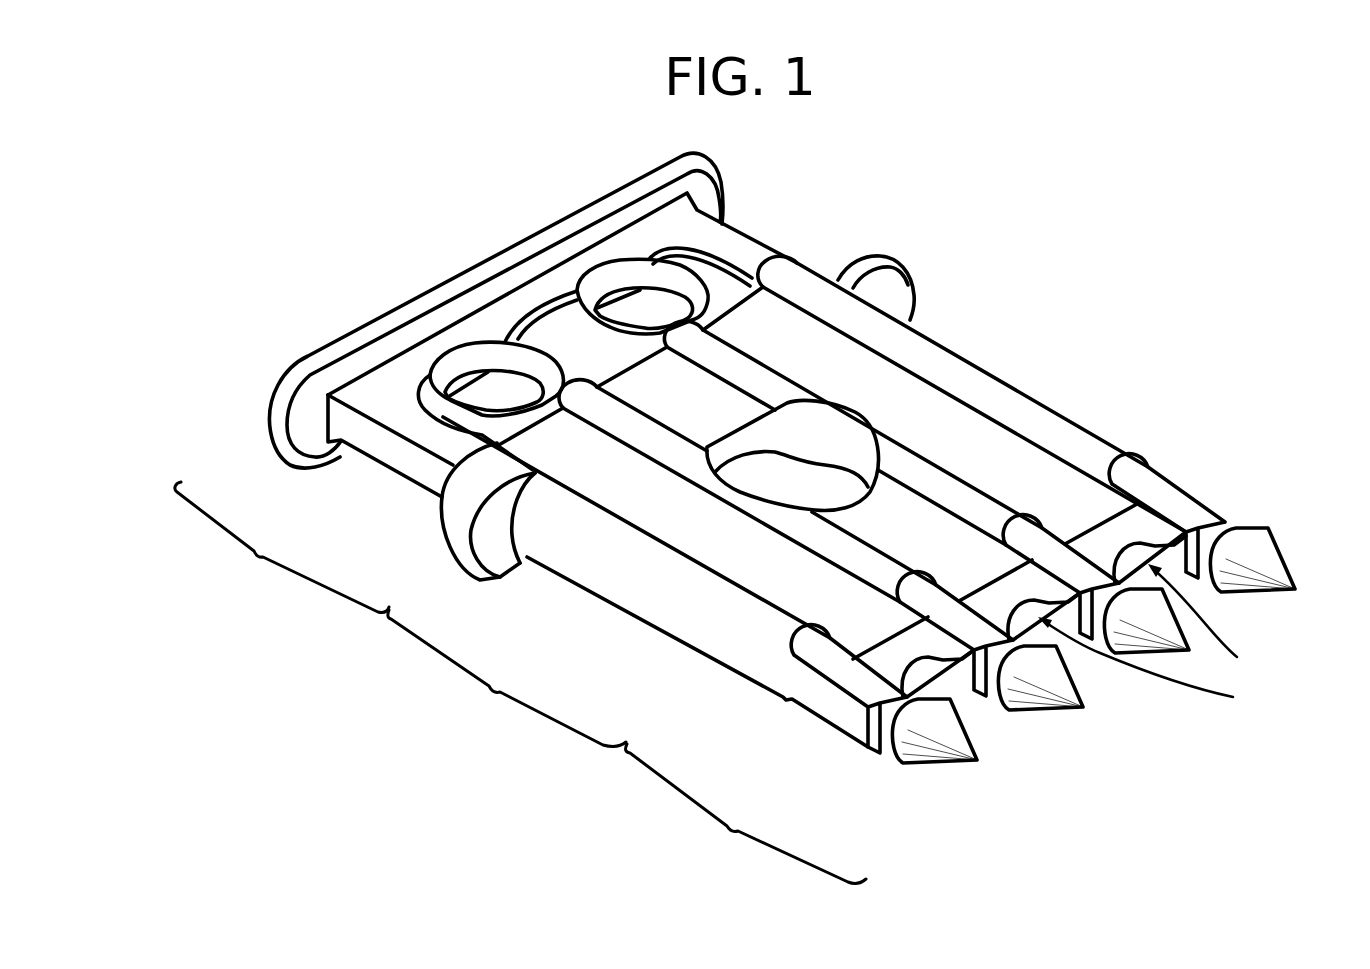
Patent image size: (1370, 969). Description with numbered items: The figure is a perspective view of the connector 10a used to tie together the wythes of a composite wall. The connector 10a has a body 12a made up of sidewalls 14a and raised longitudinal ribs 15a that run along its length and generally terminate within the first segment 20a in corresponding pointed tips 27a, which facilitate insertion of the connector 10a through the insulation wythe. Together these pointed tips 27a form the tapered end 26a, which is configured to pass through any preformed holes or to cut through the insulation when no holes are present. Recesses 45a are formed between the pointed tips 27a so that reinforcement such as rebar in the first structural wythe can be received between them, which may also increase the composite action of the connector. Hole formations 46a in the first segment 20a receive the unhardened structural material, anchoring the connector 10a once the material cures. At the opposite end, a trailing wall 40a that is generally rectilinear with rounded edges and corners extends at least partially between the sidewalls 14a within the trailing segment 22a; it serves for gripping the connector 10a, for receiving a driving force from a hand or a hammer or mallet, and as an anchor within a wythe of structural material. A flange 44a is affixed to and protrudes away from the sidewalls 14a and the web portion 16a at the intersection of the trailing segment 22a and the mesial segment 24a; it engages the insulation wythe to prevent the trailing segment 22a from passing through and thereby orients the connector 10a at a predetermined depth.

The connector 10a is at (438, 225).
The body 12a is at (1010, 447).
The sidewalls 14a is at (643, 587).
The raised longitudinal ribs 15a is at (727, 360).
The web portion 16a is at (835, 597).
The first segment 20a is at (746, 813).
The trailing segment 22a is at (282, 547).
The mesial segment 24a is at (507, 678).
The tapered end 26a is at (980, 763).
The pointed tips 27a is at (1043, 697).
The trailing wall 40a is at (375, 333).
The flange 44a is at (450, 547).
The recesses 45a is at (1165, 638).
The hole formations 46a is at (493, 390).